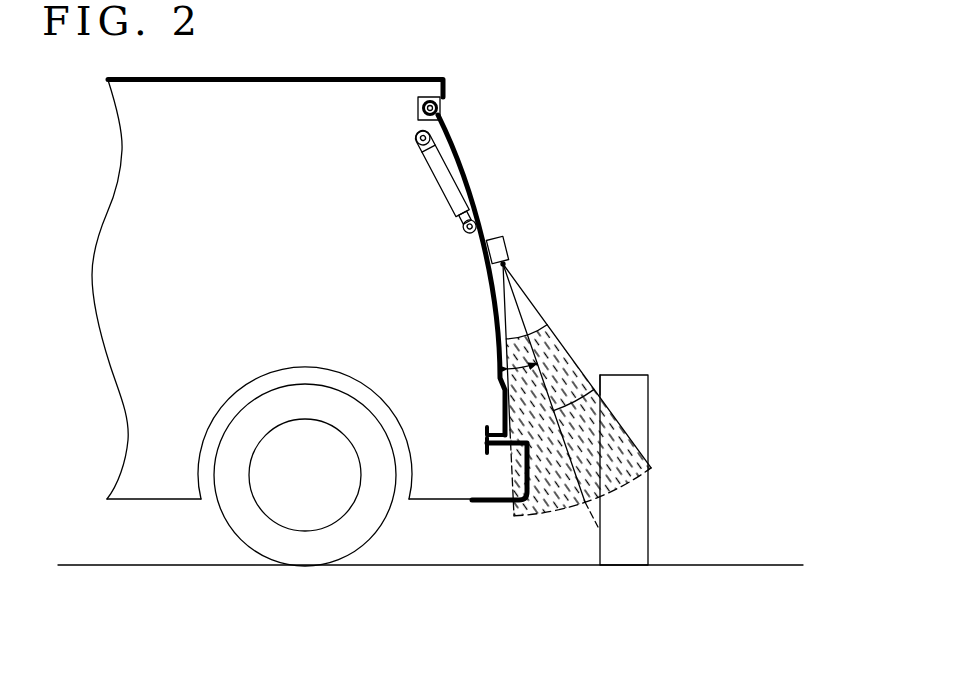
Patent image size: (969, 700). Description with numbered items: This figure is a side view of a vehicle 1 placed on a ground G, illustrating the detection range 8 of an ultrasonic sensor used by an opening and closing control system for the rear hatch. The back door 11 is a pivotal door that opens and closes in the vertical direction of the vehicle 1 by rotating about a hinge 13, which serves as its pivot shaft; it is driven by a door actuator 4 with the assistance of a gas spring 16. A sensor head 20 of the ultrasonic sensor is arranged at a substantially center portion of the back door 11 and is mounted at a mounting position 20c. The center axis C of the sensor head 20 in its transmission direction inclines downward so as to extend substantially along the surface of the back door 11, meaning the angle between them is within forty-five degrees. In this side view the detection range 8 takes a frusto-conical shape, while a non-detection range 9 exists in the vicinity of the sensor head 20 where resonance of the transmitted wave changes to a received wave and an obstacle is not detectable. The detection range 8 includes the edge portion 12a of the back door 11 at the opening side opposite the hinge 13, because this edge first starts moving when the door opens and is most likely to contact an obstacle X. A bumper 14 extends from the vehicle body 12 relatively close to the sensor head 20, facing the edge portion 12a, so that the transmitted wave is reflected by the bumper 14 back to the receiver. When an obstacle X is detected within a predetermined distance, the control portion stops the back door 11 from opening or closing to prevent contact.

The vehicle 1 is at (585, 156).
The vehicle body 12 is at (318, 77).
The edge portion 12a is at (502, 447).
The back door 11 is at (470, 177).
The hinge 13 is at (417, 119).
The door actuator 4 is at (418, 107).
The gas spring 16 is at (437, 182).
The sensor head 20 is at (508, 243).
The mounting position 20c is at (505, 265).
The non-detection range 9 is at (533, 313).
The bumper 14 is at (533, 462).
The detection range 8 is at (620, 475).
The obstacle X is at (632, 388).
The center axis C is at (595, 368).
The ground G is at (760, 565).